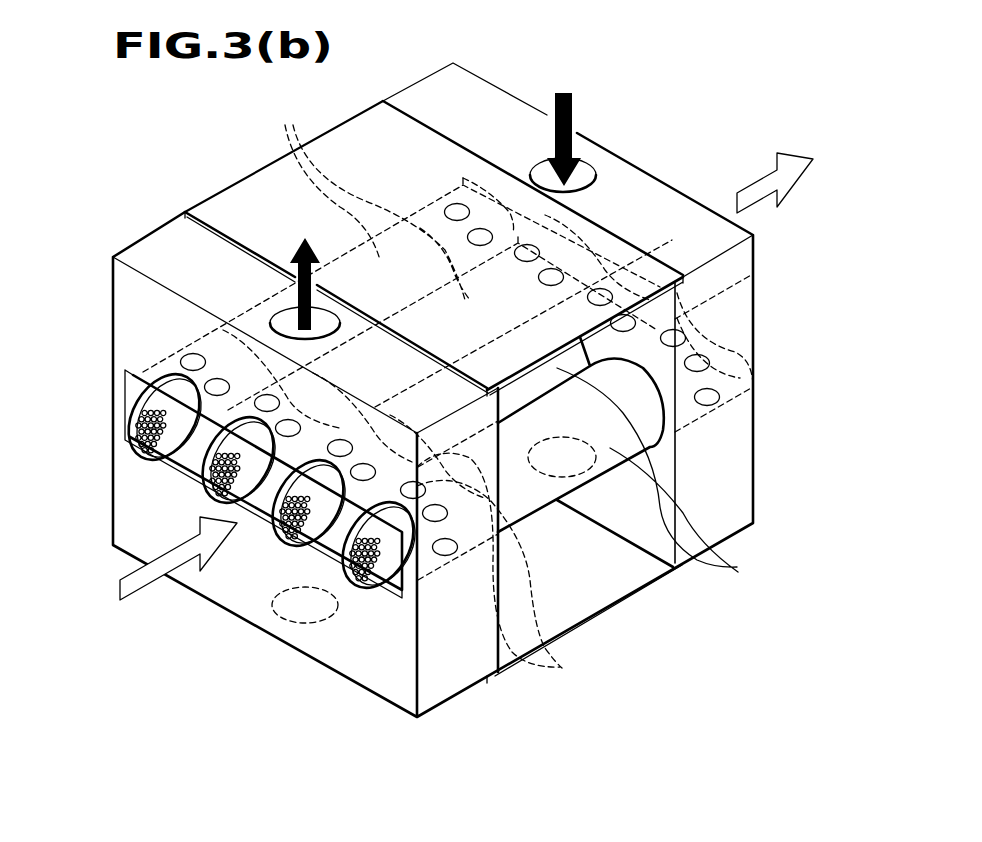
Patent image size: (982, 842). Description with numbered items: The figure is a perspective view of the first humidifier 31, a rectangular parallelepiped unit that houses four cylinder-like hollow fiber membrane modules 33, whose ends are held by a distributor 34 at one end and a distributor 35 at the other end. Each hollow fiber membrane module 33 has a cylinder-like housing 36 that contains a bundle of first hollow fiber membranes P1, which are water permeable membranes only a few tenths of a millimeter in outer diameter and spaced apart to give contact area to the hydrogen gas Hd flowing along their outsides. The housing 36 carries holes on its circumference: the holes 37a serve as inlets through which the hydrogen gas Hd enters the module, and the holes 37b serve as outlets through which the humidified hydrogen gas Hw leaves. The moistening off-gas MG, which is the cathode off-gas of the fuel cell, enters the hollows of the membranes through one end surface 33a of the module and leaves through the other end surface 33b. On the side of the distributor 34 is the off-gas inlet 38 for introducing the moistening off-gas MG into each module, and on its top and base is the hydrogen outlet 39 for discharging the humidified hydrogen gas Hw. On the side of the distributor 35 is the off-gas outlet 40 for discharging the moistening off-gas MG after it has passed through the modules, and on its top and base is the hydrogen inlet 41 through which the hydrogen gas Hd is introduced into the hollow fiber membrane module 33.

The first humidifier 31 is at (663, 105).
The hollow fiber membrane module 33 is at (553, 519).
The end surface 33a is at (320, 537).
The end surface 33b is at (732, 365).
The distributor 34 is at (143, 307).
The distributor 35 is at (657, 178).
The housing 36 is at (456, 342).
The holes 37a is at (740, 412).
The holes 37b is at (512, 573).
The off-gas inlet 38 is at (210, 490).
The hydrogen outlet 39 is at (290, 337).
The off-gas outlet 40 is at (740, 417).
The hydrogen inlet 41 is at (583, 177).
The first hollow fiber membranes P1 is at (370, 560).
The humidified hydrogen gas Hw is at (305, 276).
The hydrogen gas Hd is at (562, 123).
The moistening off-gas MG is at (464, 380).